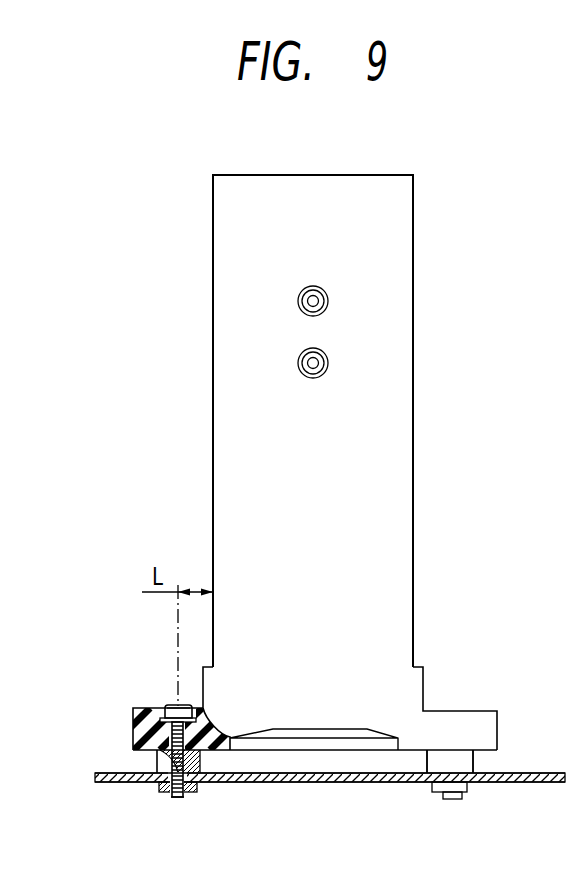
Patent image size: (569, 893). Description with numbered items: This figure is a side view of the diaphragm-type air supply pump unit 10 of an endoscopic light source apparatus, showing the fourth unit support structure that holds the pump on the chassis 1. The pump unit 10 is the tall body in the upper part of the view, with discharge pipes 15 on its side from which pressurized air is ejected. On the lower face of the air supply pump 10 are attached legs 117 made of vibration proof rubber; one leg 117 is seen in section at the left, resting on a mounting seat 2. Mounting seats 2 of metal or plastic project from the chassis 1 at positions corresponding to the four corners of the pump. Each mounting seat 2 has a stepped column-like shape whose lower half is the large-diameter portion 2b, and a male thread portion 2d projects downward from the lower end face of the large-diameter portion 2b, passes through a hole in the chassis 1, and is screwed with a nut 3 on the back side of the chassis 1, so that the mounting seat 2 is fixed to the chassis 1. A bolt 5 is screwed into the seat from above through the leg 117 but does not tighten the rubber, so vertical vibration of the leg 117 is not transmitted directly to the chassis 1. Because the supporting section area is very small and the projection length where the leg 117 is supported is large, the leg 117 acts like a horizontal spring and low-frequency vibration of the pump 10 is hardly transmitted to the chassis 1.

The air supply pump unit 10 is at (428, 232).
The discharge pipes 15 is at (328, 302).
The legs 117 is at (140, 712).
The bolt 5 is at (171, 731).
The mounting seat 2 is at (146, 762).
The large-diameter portion 2b is at (197, 760).
The male thread portion 2d is at (178, 796).
The nut 3 is at (162, 793).
The chassis 1 is at (332, 783).